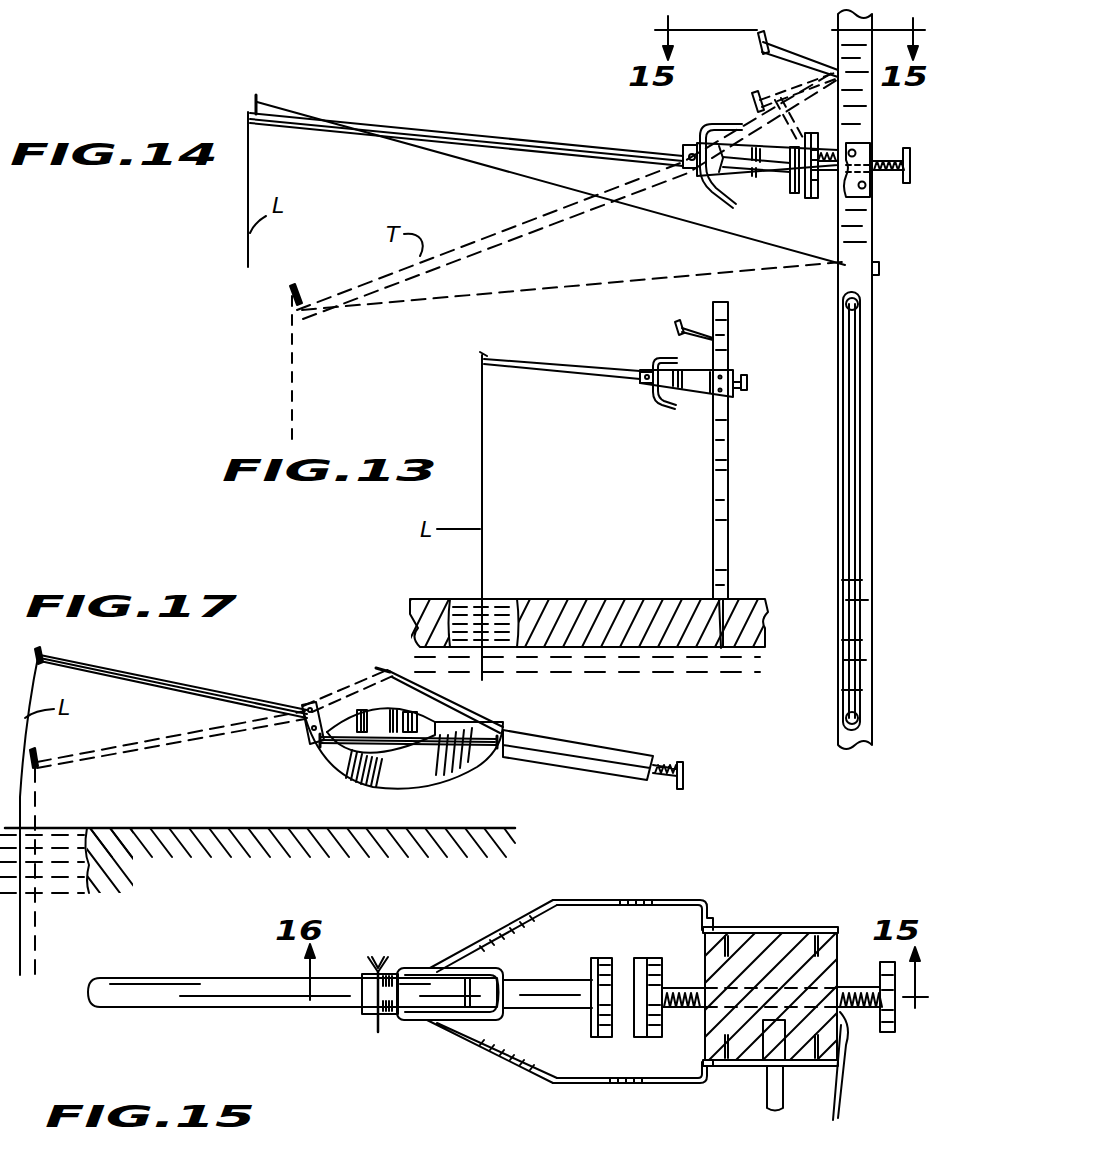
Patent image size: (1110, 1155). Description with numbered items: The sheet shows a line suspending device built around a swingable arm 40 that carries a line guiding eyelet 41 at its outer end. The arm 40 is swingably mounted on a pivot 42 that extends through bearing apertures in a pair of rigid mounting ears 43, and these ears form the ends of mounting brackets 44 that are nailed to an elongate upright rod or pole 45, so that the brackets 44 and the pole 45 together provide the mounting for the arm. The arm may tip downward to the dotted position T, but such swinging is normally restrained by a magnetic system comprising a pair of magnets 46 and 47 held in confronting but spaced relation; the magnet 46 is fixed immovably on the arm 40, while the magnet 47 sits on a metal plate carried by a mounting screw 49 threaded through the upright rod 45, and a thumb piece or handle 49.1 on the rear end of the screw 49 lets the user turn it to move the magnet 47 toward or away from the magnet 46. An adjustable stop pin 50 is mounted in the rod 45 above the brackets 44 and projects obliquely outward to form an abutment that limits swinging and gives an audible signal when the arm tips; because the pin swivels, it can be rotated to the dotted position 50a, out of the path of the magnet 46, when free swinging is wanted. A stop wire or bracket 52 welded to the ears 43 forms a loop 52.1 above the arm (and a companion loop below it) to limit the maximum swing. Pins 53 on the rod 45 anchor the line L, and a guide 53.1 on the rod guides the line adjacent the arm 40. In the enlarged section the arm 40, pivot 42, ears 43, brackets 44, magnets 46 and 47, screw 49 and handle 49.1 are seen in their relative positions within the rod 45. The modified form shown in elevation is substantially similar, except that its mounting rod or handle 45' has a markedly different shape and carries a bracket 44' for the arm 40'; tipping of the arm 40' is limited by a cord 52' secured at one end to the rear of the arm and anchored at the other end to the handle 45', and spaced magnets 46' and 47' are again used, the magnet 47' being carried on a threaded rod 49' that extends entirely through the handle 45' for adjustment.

In FIG. 14, the swingable arm 40 is at (520, 144).
In FIG. 13, the swingable arm 40 is at (562, 355).
In FIG. 15, the swingable arm 40 is at (293, 1010).
In FIG. 14, the line guiding eyelet 41 is at (257, 100).
In FIG. 14, the pivot 42 is at (689, 145).
In FIG. 15, the pivot 42 is at (376, 1032).
In FIG. 14, the rigid mounting ears 43 is at (687, 180).
In FIG. 15, the rigid mounting ears 43 is at (383, 972).
In FIG. 14, the mounting brackets 44 is at (806, 147).
In FIG. 13, the mounting brackets 44 is at (686, 416).
In FIG. 15, the mounting brackets 44 is at (570, 968).
In FIG. 14, the elongate rod or pole 45 is at (879, 379).
In FIG. 13, the elongate rod or pole 45 is at (684, 475).
In FIG. 15, the elongate rod or pole 45 is at (718, 995).
In FIG. 14, the magnet 46 is at (799, 193).
In FIG. 15, the magnet 46 is at (609, 976).
In FIG. 14, the magnet 47 is at (819, 147).
In FIG. 15, the magnet 47 is at (669, 976).
In FIG. 14, the mounting screw 49 is at (897, 186).
In FIG. 13, the mounting screw 49 is at (757, 408).
In FIG. 15, the mounting screw 49 is at (866, 964).
In FIG. 15, the thumb piece or handle 49.1 is at (893, 1013).
In FIG. 14, the adjustable stop pin 50 is at (795, 50).
In FIG. 14, the dotted line position of stop pin 50a is at (790, 84).
In FIG. 14, the stop wire or bracket 52 is at (702, 193).
In FIG. 13, the stop wire or bracket 52 is at (640, 405).
In FIG. 15, the stop wire or bracket 52 is at (450, 963).
In FIG. 15, the loop 52.1 is at (505, 980).
In FIG. 14, the pins 53 is at (858, 308).
In FIG. 14, the guide 53.1 is at (879, 270).
In FIG. 17, the arm 40' is at (171, 675).
In FIG. 17, the bracket 44' is at (275, 701).
In FIG. 17, the mounting rod or handle 45' is at (478, 759).
In FIG. 17, the magnet 46' is at (349, 687).
In FIG. 17, the magnet 47' is at (465, 708).
In FIG. 17, the threaded rod 49' is at (632, 786).
In FIG. 17, the cord 52' is at (462, 727).